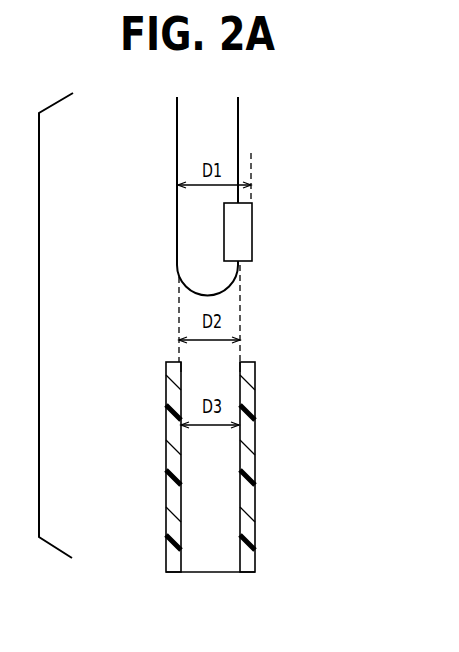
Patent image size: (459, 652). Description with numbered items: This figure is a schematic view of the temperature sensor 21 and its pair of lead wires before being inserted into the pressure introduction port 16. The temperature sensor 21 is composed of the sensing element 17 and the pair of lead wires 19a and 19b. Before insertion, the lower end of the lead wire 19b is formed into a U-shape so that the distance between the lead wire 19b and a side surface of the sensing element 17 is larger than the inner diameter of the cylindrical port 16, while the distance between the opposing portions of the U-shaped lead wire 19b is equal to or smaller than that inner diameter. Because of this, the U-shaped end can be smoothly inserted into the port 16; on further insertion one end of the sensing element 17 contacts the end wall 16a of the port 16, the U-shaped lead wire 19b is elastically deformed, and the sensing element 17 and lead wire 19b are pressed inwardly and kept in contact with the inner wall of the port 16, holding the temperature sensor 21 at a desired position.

The temperature sensor 21 is at (245, 175).
The lead wire 19a is at (238, 140).
The lead wire 19b is at (177, 136).
The sensing element 17 is at (240, 237).
The pressure introduction port 16 is at (223, 458).
The end wall 16a is at (253, 362).